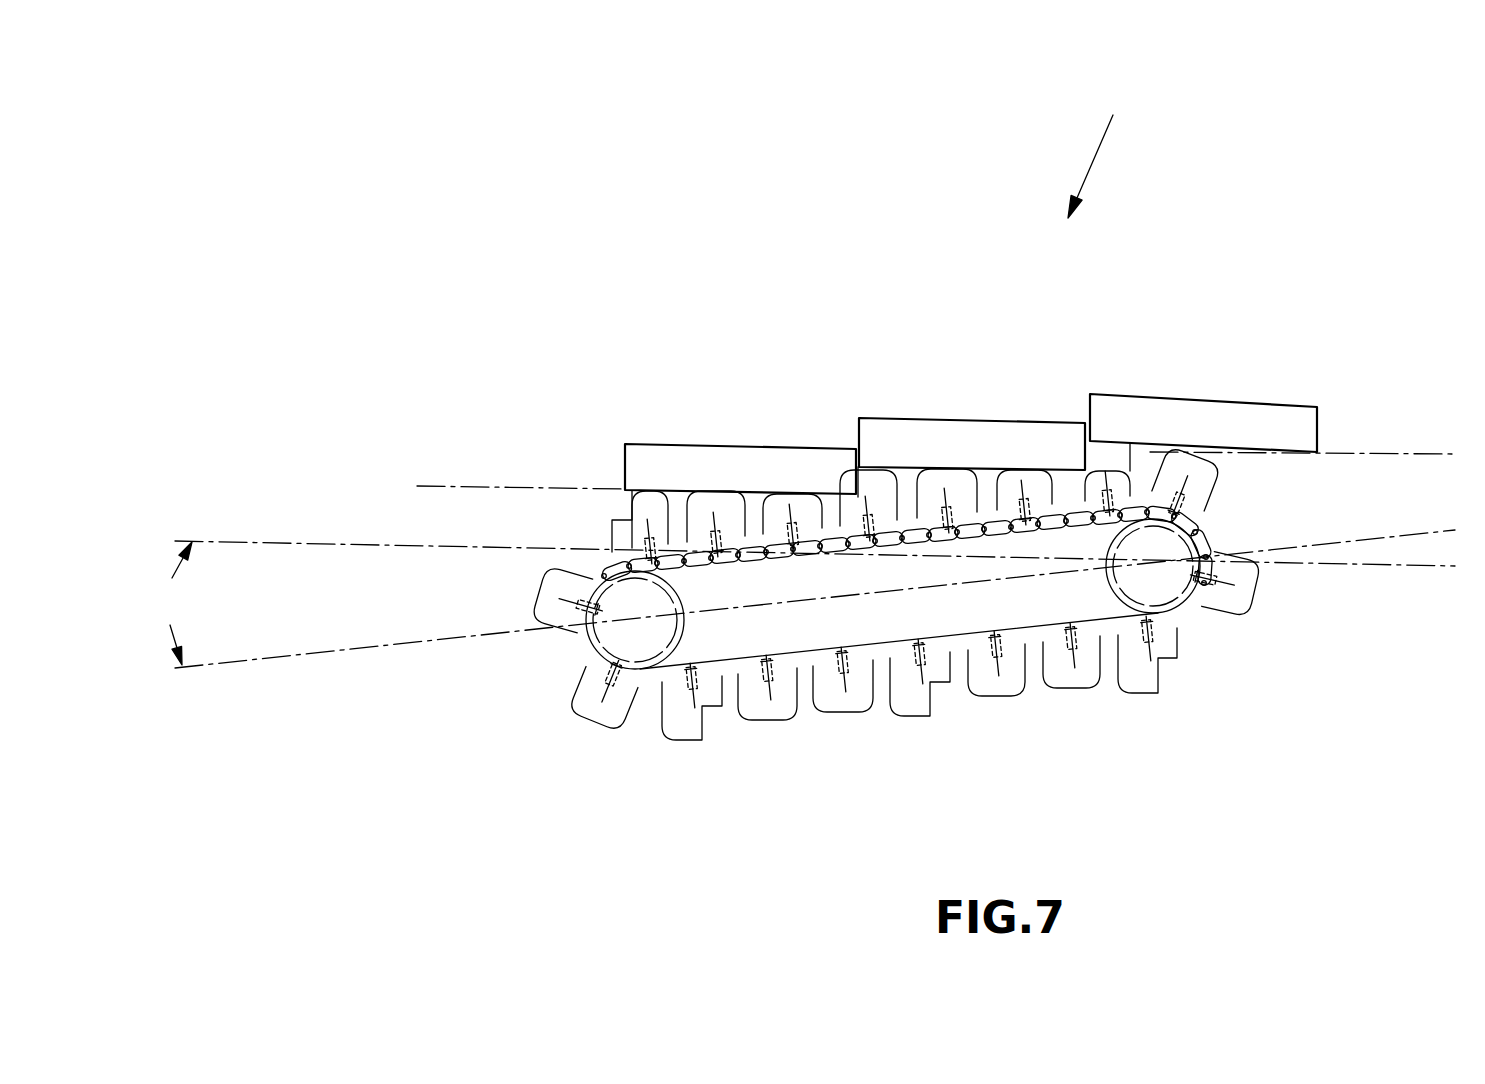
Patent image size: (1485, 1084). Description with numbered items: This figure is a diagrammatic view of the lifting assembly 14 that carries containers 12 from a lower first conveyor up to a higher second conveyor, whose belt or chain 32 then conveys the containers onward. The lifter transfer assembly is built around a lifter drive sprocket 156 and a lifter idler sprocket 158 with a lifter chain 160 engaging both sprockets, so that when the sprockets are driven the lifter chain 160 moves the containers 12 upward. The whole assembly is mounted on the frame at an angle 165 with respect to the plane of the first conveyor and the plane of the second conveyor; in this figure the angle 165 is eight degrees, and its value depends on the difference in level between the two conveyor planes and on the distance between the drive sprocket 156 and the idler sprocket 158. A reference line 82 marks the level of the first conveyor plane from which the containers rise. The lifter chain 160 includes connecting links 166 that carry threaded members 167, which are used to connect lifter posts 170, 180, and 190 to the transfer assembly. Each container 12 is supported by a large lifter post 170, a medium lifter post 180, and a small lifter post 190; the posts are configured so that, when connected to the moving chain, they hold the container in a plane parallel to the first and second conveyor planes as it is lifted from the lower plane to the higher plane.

The conveyor apparatus 14 is at (1107, 150).
The container 12 is at (1185, 413).
The belt or chain 32 is at (1415, 452).
The reference line 82 is at (530, 485).
The threaded member 167 is at (703, 520).
The angle 165 is at (799, 599).
The lifter idler sprocket 158 is at (597, 647).
The lifter drive sprocket 156 is at (1180, 602).
The lifter chain 160 is at (960, 637).
The connecting link 166 is at (648, 567).
The small lifter post 190 is at (1003, 690).
The medium lifter post 180 is at (1082, 690).
The large lifter post 170 is at (1155, 690).